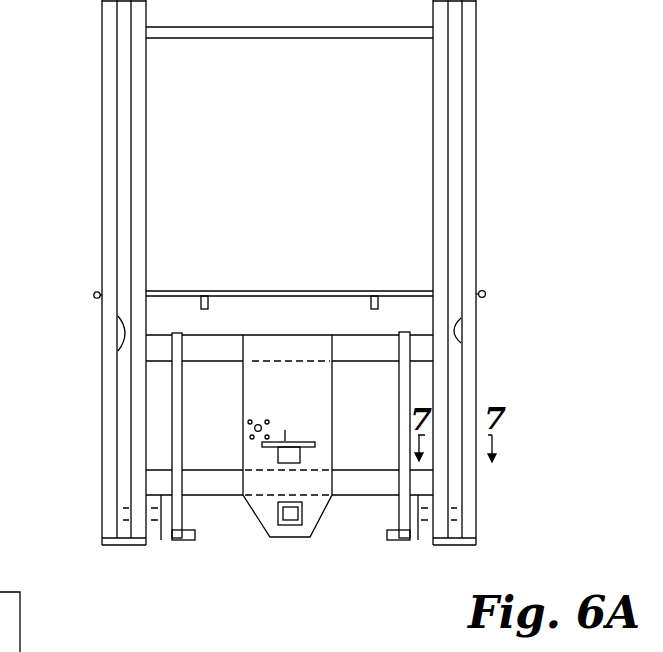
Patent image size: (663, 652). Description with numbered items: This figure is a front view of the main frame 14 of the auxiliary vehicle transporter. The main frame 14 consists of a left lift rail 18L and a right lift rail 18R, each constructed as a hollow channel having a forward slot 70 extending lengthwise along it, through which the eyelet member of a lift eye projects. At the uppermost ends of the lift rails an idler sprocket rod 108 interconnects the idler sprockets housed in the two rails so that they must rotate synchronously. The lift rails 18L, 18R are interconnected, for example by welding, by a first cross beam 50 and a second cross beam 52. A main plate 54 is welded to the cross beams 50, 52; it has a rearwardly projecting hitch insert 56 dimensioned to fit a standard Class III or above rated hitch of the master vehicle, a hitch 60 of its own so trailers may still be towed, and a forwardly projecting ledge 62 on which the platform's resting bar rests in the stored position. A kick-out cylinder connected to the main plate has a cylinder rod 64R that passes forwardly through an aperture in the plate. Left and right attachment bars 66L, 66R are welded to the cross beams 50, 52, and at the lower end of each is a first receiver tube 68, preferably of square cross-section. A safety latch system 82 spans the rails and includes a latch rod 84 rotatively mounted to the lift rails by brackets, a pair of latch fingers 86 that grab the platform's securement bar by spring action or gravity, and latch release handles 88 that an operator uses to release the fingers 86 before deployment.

The main frame 14 is at (83, 204).
The left lift rail 18L is at (96, 126).
The right lift rail 18R is at (485, 105).
The idler sprocket rod 108 is at (210, 40).
The safety latch system 82 is at (313, 278).
The latch rod 84 is at (256, 289).
The latch fingers 86 is at (203, 300).
The latch release handles 88 is at (94, 294).
The forward slot 70 is at (127, 335).
The first cross beam 50 is at (240, 336).
The second cross beam 52 is at (222, 470).
The main plate 54 is at (334, 384).
The hitch insert 56 is at (300, 457).
The hitch 60 is at (298, 525).
The ledge 62 is at (285, 430).
The cylinder rod 64R is at (258, 417).
The left attachment bar 66L is at (183, 393).
The right attachment bar 66R is at (398, 431).
The first receiver tube 68 is at (192, 540).